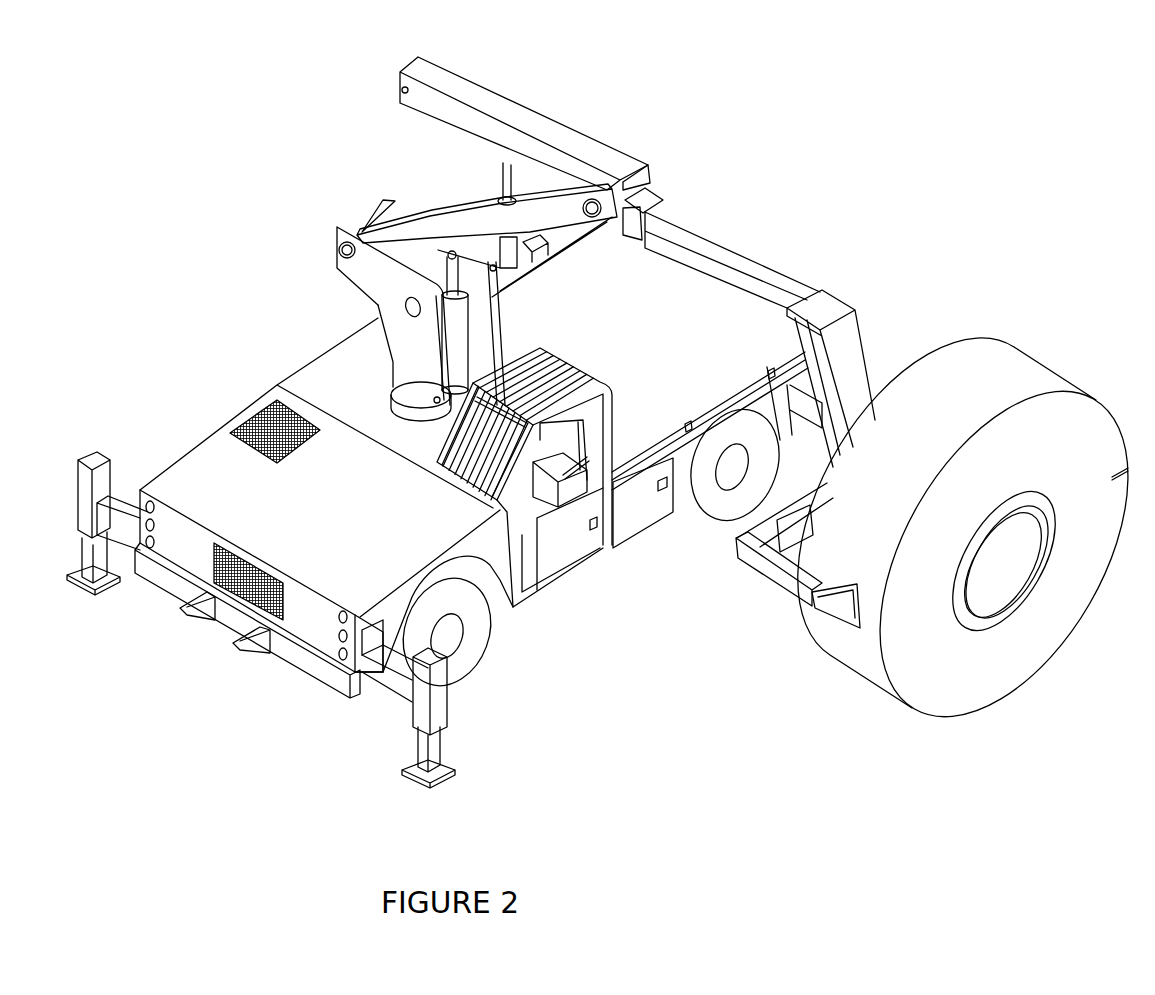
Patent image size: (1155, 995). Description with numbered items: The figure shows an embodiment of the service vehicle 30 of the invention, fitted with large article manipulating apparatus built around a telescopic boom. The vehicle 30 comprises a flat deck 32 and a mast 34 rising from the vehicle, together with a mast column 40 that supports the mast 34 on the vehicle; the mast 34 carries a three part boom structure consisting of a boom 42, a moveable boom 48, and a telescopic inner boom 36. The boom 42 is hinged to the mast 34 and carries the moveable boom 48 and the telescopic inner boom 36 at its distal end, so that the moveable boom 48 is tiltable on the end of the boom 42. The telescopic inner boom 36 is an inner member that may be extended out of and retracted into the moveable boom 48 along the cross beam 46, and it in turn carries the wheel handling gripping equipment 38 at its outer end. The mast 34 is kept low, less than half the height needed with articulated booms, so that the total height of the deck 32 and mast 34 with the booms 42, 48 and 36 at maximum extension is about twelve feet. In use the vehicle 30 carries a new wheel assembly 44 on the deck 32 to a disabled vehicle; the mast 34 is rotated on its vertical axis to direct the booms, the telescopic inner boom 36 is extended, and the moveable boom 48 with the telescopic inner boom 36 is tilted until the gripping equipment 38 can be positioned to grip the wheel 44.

The vehicle 30 is at (667, 190).
The deck 32 is at (622, 343).
The mast 34 is at (330, 245).
The telescopic inner boom 36 is at (797, 280).
The wheel handling gripping equipment 38 is at (763, 573).
The mast column 40 is at (403, 355).
The boom 42 is at (392, 218).
The wheel assembly 44 is at (1050, 366).
The cross beam 46 is at (723, 237).
The moveable boom 48 is at (537, 120).